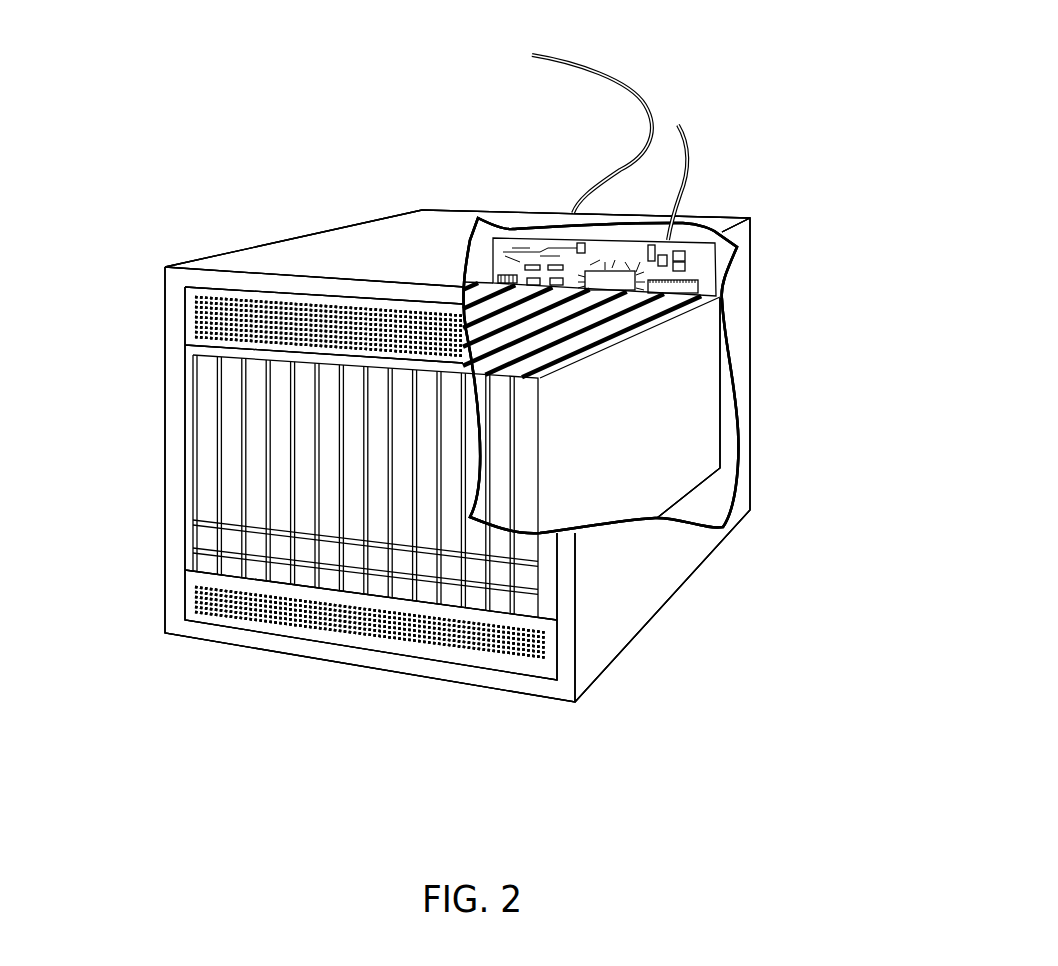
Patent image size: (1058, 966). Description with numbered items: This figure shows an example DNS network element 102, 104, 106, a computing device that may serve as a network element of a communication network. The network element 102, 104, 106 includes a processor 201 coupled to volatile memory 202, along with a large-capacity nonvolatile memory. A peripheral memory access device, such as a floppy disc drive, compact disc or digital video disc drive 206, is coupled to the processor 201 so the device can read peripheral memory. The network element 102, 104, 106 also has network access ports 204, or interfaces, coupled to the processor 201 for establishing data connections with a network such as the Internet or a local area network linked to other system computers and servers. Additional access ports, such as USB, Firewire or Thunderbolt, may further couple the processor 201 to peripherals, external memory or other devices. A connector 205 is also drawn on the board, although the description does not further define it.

The DNS network element 102 is at (108, 182).
The DNS network element 104 is at (457, 456).
The DNS network element 106 is at (457, 456).
The processor 201 is at (600, 278).
The volatile memory 202 is at (252, 413).
The network access ports 204 is at (227, 478).
The connector 205 is at (497, 280).
The compact disc (CD) or digital video disc (DVD) drive 206 is at (615, 75).